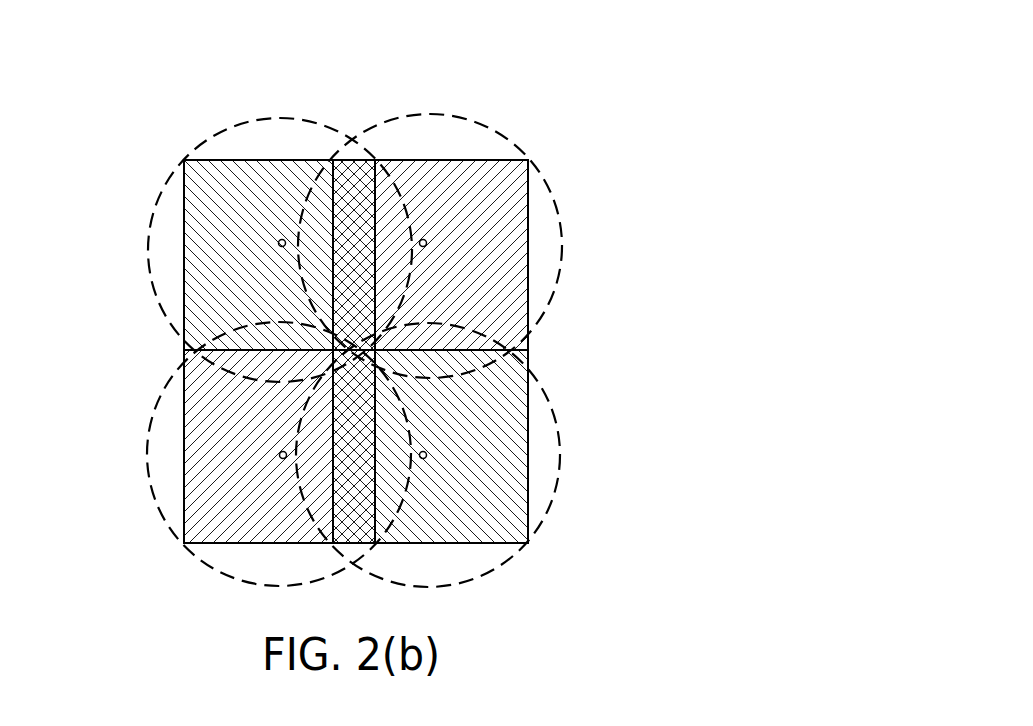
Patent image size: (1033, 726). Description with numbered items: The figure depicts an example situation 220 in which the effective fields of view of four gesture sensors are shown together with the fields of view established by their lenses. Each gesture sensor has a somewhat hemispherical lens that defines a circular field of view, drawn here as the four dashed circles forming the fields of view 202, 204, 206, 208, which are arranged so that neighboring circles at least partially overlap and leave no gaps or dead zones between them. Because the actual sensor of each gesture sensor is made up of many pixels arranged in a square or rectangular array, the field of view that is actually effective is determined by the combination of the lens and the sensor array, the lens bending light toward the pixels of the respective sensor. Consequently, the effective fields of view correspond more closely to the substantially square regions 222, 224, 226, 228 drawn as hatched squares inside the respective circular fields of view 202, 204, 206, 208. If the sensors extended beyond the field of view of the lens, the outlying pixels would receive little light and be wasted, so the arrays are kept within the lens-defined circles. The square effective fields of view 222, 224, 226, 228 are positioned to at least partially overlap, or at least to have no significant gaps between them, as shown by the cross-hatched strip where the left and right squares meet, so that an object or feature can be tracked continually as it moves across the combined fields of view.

The field of view 202 is at (158, 203).
The field of view 204 is at (543, 312).
The field of view 206 is at (153, 422).
The field of view 208 is at (553, 487).
The situation 220 is at (397, 320).
The effective field of view 222 is at (273, 160).
The effective field of view 224 is at (443, 160).
The effective field of view 226 is at (184, 486).
The effective field of view 228 is at (519, 443).